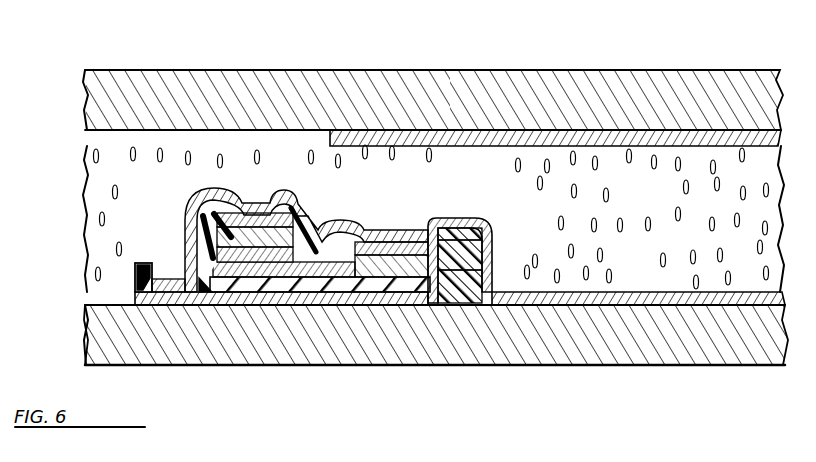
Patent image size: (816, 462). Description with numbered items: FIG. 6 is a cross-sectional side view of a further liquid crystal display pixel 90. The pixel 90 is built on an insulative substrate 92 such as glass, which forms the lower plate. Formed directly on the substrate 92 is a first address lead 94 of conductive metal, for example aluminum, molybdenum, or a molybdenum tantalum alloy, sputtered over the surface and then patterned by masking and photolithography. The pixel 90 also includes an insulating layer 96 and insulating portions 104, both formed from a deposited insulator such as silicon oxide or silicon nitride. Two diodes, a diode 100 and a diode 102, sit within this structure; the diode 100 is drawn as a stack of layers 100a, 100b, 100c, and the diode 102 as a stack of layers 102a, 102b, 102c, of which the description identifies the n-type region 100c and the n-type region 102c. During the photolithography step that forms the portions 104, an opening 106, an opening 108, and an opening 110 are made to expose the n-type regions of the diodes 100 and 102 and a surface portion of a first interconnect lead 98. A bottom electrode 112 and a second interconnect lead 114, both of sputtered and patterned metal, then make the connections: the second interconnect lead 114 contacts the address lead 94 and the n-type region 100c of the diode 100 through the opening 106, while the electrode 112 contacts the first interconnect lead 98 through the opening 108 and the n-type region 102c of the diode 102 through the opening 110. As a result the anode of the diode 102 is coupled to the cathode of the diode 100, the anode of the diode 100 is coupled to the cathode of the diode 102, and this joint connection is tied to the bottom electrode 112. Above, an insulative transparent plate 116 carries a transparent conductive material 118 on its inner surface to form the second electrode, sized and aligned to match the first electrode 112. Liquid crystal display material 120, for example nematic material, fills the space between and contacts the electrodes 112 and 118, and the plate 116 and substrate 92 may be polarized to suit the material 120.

The liquid crystal display pixel 90 is at (706, 57).
The insulative substrate 92 is at (578, 352).
The first address lead 94 is at (140, 303).
The insulating layer 96 is at (186, 281).
The first interconnect lead 98 is at (193, 256).
The diode 100 is at (217, 214).
The lower layer of first cell 100a is at (186, 224).
The middle layer of first cell 100b is at (250, 208).
The n-type region of diode 100 100c is at (276, 210).
The diode 102 is at (495, 246).
The lower layer of second cell 102a is at (494, 272).
The middle layer of second cell 102b is at (490, 240).
The n-type region of diode 102 102c is at (431, 222).
The insulating portions 104 is at (352, 215).
The opening 106 is at (292, 210).
The opening 108 is at (326, 236).
The opening 110 is at (400, 240).
The bottom electrode 112 is at (670, 293).
The second interconnect lead 114 is at (205, 203).
The insulative transparent plate 116 is at (313, 88).
The transparent conductive material 118 is at (497, 137).
The liquid crystal display material 120 is at (665, 206).